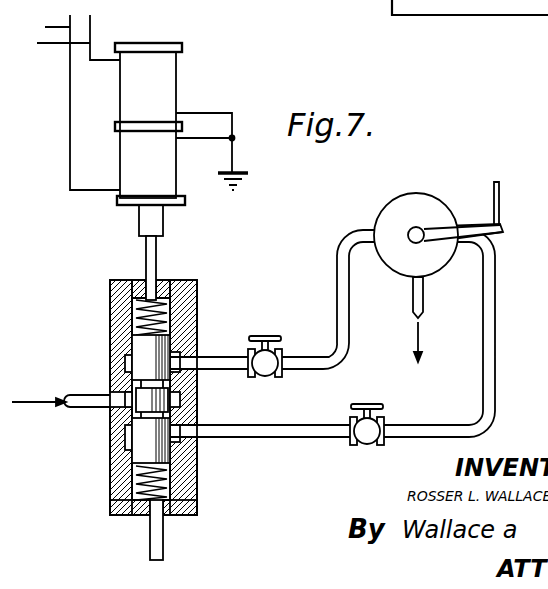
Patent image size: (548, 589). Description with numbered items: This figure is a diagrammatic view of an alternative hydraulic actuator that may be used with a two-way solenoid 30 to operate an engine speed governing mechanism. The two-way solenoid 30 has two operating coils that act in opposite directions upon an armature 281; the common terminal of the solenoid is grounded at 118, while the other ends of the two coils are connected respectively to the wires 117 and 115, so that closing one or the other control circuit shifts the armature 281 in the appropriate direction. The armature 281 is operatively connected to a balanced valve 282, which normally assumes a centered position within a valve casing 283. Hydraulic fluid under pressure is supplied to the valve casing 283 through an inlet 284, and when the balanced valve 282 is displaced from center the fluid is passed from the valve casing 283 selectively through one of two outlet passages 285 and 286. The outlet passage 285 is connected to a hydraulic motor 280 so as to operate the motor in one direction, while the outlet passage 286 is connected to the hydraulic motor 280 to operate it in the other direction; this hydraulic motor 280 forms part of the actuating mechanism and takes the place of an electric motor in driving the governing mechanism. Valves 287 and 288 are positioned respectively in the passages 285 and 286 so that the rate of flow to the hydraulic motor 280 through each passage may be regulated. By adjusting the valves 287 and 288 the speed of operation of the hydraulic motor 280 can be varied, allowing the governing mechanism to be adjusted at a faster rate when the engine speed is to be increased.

The two-way solenoid 30 is at (152, 44).
The wire 115 is at (70, 102).
The wire 117 is at (63, 37).
The ground 118 is at (245, 180).
The hydraulic motor 280 is at (437, 165).
The armature 281 is at (145, 225).
The balanced valve 282 is at (141, 352).
The valve casing 283 is at (120, 485).
The inlet 284 is at (97, 406).
The outlet passage 285 is at (243, 320).
The outlet passage 286 is at (237, 440).
The valve 287 is at (258, 345).
The valve 288 is at (360, 402).